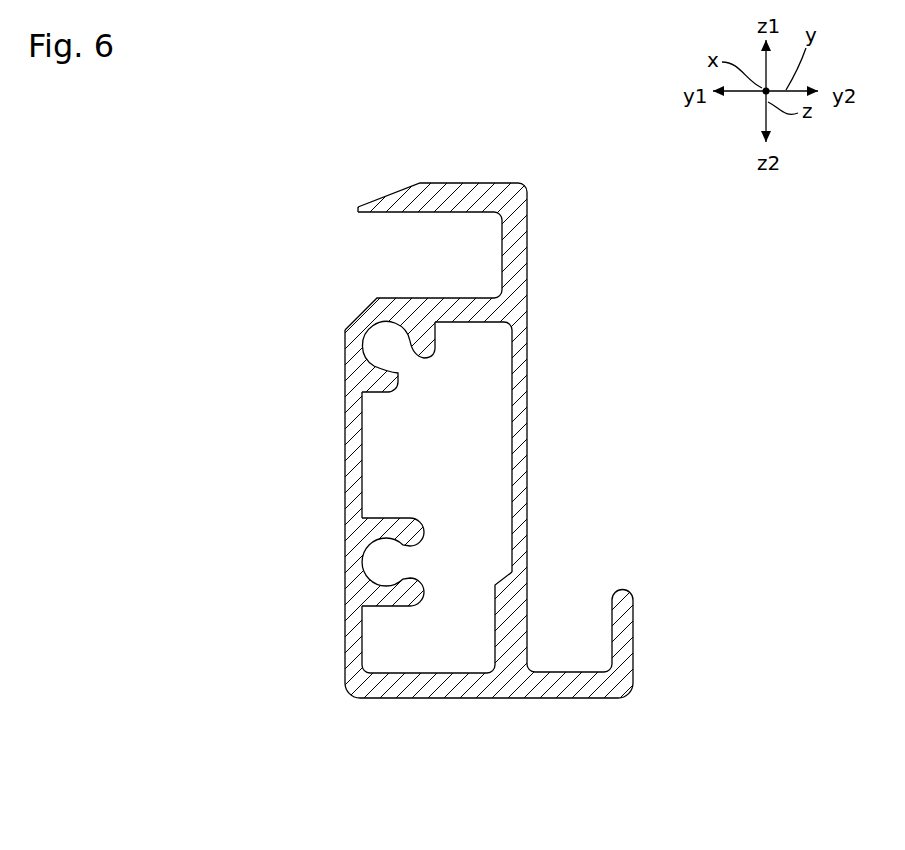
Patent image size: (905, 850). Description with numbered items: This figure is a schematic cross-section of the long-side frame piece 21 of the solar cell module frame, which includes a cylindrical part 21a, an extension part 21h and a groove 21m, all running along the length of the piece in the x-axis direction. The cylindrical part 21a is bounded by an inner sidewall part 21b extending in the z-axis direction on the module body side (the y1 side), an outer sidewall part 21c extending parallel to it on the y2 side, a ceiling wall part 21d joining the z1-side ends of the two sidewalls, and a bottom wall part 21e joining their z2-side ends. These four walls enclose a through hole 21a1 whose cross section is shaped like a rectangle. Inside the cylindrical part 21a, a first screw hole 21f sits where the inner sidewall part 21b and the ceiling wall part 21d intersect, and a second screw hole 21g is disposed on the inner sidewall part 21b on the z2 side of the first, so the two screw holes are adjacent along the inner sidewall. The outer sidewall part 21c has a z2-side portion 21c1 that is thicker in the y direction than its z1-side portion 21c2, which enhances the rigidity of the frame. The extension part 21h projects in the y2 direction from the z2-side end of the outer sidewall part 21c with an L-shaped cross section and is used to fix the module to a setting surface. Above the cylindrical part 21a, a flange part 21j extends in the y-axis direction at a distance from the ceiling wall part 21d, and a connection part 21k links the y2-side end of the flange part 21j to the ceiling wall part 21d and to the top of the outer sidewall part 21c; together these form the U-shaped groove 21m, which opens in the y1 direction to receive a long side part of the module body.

The long-side frame piece 21 is at (512, 117).
The cylindrical part 21a is at (337, 438).
The through hole 21a1 is at (406, 673).
The inner sidewall part 21b is at (345, 470).
The outer sidewall part 21c is at (535, 422).
The z2-side portion 21c1 is at (527, 602).
The z1-side portion 21c2 is at (527, 380).
The ceiling wall part 21d is at (458, 298).
The bottom wall part 21e is at (460, 698).
The first screw hole 21f is at (390, 362).
The second screw hole 21g is at (390, 583).
The extension part 21h is at (633, 635).
The flange part 21j is at (480, 182).
The connection part 21k is at (527, 240).
The groove 21m is at (452, 213).